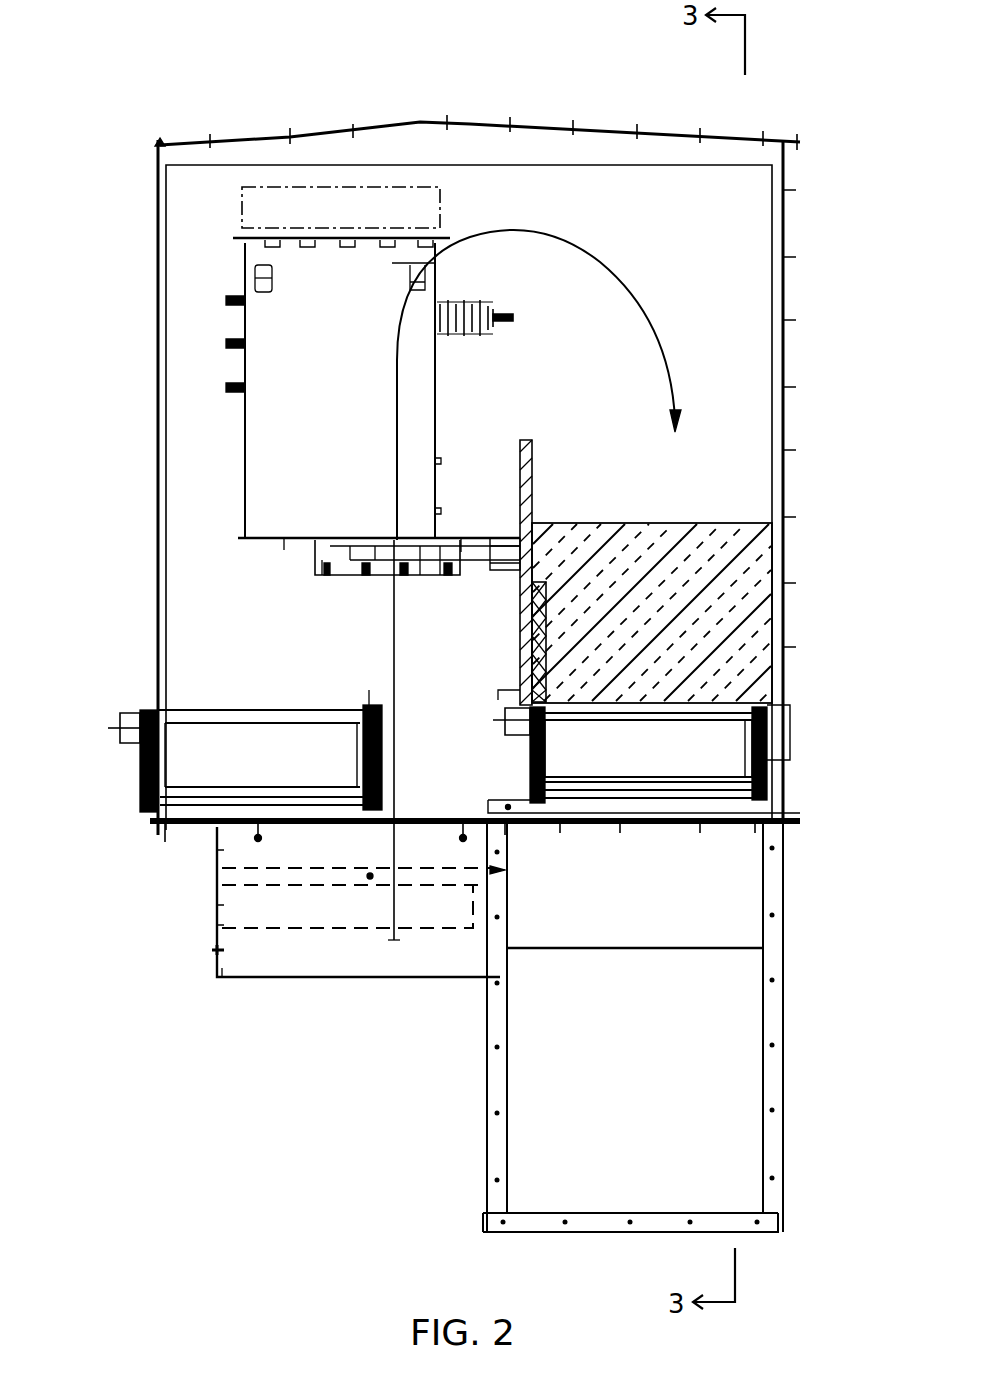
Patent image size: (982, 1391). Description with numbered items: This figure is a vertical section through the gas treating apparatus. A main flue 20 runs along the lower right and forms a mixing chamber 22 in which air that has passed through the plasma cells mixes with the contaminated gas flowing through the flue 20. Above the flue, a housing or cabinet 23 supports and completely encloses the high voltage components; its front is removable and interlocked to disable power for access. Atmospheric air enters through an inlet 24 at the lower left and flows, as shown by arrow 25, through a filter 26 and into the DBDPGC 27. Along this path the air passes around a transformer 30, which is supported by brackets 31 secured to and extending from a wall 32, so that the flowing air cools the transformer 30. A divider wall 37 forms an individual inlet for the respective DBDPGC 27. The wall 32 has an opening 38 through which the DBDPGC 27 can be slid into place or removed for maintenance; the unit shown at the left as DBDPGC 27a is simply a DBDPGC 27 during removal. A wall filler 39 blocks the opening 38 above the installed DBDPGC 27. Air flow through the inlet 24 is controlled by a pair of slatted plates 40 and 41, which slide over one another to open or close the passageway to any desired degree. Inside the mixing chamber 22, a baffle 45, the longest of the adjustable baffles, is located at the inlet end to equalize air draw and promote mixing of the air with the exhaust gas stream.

The main flue 20 is at (770, 1047).
The mixing chamber 22 is at (648, 1090).
The housing or cabinet 23 is at (158, 480).
The inlet 24 is at (365, 985).
The arrow 25 is at (510, 232).
The filter 26 is at (245, 910).
The DBDPGC 27 is at (775, 702).
The DBDPGC during removal 27a is at (120, 712).
The transformer 30 is at (245, 310).
The bracket 31 is at (487, 530).
The wall 32 is at (540, 472).
The divider wall 37 is at (645, 522).
The opening 38 is at (520, 688).
The wall filler 39 is at (532, 660).
The slatted plate 40 is at (217, 869).
The slatted plate 41 is at (217, 885).
The baffle 45 is at (702, 878).